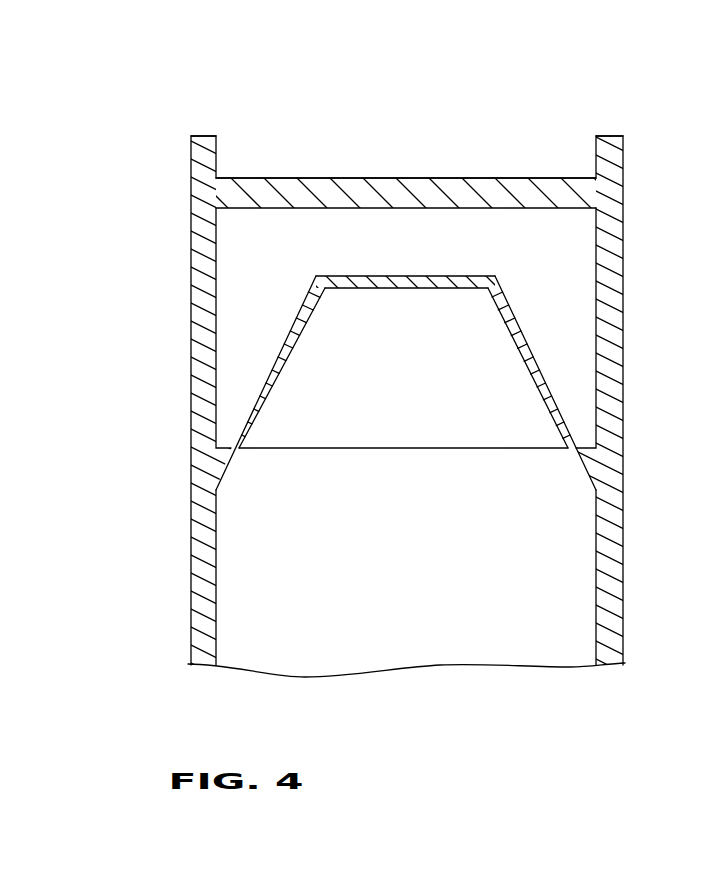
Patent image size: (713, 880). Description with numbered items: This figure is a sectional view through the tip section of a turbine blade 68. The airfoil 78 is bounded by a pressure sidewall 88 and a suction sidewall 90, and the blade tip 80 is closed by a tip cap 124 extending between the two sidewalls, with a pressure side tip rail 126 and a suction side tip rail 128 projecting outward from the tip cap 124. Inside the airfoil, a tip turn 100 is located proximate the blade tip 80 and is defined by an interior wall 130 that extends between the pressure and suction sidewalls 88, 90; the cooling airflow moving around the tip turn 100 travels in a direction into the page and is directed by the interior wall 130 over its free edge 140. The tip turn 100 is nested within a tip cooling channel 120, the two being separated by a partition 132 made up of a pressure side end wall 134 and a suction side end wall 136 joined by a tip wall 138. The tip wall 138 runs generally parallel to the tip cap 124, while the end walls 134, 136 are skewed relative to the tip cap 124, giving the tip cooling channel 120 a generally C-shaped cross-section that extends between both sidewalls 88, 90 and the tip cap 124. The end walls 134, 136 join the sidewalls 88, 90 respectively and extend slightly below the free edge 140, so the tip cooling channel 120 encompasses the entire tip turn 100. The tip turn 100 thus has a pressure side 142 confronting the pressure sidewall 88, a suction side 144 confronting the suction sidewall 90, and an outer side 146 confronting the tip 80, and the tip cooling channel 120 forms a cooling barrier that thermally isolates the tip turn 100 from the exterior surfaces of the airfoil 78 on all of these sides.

The turbine blade 68 is at (237, 31).
The airfoil 78 is at (174, 303).
The blade tip 80 is at (478, 160).
The pressure sidewall 88 is at (191, 578).
The suction sidewall 90 is at (624, 557).
The tip turn 100 is at (399, 370).
The tip cooling channel 120 is at (388, 251).
The tip cap 124 is at (412, 178).
The pressure side tip rail 126 is at (203, 135).
The suction side tip rail 128 is at (608, 135).
The interior wall 130 is at (468, 598).
The partition 132 is at (295, 284).
The pressure side end wall 134 is at (271, 372).
The suction side end wall 136 is at (532, 348).
The tip wall 138 is at (347, 276).
The free edge 140 is at (428, 448).
The pressure side 142 is at (268, 398).
The suction side 144 is at (538, 369).
The outer side 146 is at (374, 290).